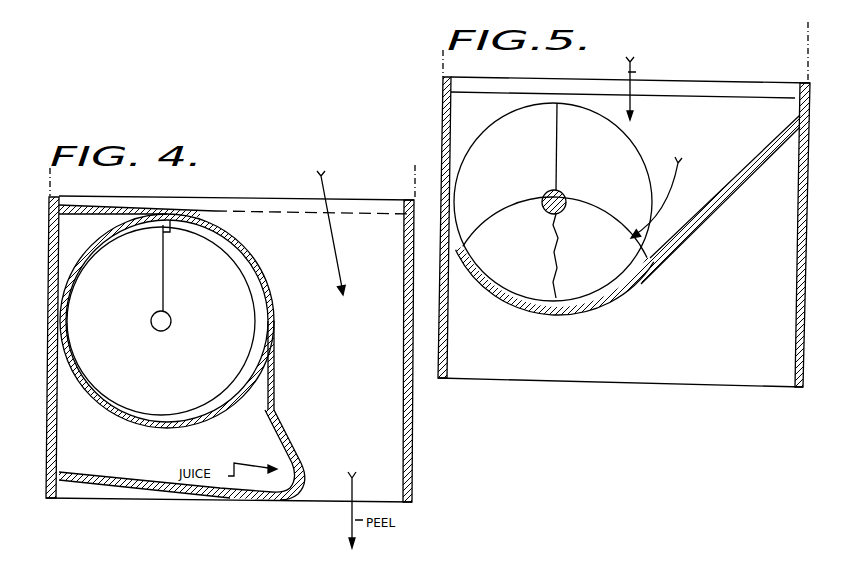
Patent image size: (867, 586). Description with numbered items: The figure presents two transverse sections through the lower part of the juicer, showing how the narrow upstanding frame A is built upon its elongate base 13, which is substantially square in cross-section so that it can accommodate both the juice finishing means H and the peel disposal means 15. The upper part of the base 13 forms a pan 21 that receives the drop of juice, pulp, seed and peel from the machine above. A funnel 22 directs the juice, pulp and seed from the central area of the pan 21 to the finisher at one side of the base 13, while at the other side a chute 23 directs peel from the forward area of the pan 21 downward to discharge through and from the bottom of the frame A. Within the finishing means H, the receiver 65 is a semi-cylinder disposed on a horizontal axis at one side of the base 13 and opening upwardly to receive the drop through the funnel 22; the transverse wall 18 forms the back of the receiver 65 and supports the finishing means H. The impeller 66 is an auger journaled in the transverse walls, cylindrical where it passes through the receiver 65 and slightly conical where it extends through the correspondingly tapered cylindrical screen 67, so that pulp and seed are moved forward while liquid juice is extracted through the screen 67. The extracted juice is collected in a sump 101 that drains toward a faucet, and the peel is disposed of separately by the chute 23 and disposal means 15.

In FIG. 4, the base 13 is at (273, 199).
In FIG. 5, the base 13 is at (441, 100).
In FIG. 4, the peel disposal means 15 is at (375, 421).
In FIG. 5, the transverse wall 18 is at (462, 131).
In FIG. 4, the pan 21 is at (219, 210).
In FIG. 5, the pan 21 is at (577, 92).
In FIG. 5, the funnel 22 is at (713, 170).
In FIG. 4, the chute 23 is at (330, 275).
In FIG. 5, the receiver 65 is at (503, 303).
In FIG. 4, the impeller 66 is at (243, 307).
In FIG. 5, the impeller 66 is at (627, 153).
In FIG. 4, the screen 67 is at (99, 409).
In FIG. 4, the sump 101 is at (140, 486).
In FIG. 4, the juice finishing means H is at (235, 340).
In FIG. 5, the juice finishing means H is at (616, 255).
In FIG. 4, the frame A is at (252, 498).
In FIG. 5, the frame A is at (634, 384).